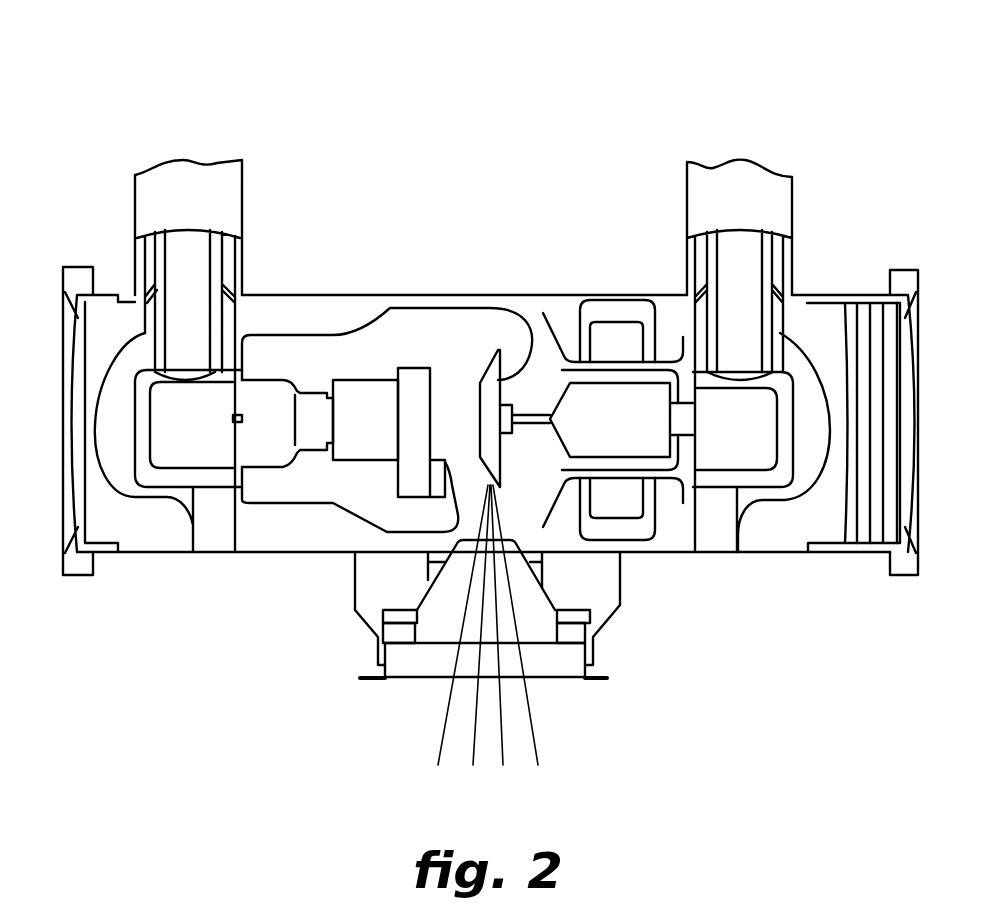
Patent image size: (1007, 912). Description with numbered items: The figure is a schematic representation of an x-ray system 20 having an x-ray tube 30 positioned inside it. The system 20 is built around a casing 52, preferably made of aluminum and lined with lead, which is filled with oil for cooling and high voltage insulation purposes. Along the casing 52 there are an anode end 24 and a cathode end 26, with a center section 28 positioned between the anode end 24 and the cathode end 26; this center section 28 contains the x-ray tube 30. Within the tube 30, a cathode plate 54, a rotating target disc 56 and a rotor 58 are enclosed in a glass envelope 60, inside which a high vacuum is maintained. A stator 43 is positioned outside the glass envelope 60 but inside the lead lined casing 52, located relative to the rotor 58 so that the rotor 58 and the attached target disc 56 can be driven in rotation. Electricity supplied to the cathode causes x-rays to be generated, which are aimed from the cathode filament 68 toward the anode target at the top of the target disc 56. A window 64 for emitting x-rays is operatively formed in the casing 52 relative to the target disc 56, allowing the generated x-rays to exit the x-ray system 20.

The x-ray system 20 is at (458, 133).
The anode end 24 is at (791, 362).
The cathode end 26 is at (262, 480).
The center section 28 is at (496, 329).
The x-ray tube 30 is at (443, 295).
The stator 43 is at (622, 312).
The casing 52 is at (290, 295).
The cathode plate 54 is at (444, 373).
The rotating target disc 56 is at (498, 352).
The rotor 58 is at (628, 440).
The glass envelope 60 is at (348, 352).
The window 64 is at (548, 672).
The cathode filament 68 is at (453, 515).